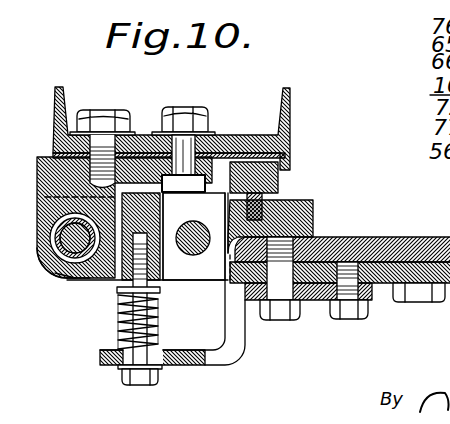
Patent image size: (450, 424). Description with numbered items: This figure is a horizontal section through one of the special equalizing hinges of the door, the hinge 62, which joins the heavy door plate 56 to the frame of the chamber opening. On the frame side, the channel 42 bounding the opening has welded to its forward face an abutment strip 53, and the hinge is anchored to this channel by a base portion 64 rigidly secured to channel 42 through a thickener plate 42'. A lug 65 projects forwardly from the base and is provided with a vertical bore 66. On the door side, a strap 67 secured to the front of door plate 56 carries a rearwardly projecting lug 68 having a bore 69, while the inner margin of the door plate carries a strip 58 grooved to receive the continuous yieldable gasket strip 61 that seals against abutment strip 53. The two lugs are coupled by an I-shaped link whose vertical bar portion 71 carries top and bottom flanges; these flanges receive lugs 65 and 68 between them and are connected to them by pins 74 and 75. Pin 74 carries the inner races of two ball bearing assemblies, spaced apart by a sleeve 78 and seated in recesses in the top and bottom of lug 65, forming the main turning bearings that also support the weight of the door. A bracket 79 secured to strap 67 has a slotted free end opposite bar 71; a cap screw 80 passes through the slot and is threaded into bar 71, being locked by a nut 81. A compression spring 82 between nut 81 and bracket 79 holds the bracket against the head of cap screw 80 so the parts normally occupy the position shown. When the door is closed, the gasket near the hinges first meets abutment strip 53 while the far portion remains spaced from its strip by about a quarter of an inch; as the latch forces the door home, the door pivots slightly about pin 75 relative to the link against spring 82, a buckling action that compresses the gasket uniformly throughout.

The channel 42 is at (225, 212).
The thickener plate 42' is at (206, 141).
The abutment strip 53 is at (280, 178).
The door plate 56 is at (410, 243).
The strip 58 is at (315, 212).
The gasket strip 61 is at (266, 182).
The hinge 62 is at (50, 274).
The base portion 64 is at (50, 157).
The lug 65 is at (50, 252).
The vertical bore 66 is at (73, 276).
The strap 67 is at (393, 294).
The lug 68 is at (183, 270).
The bore 69 is at (214, 255).
The vertical bar portion 71 is at (145, 133).
The pin 74 is at (62, 237).
The pin 75 is at (200, 226).
The sleeve 78 is at (62, 275).
The bracket 79 is at (322, 302).
The cap screw 80 is at (125, 372).
The nut 81 is at (123, 288).
The compression spring 82 is at (122, 316).